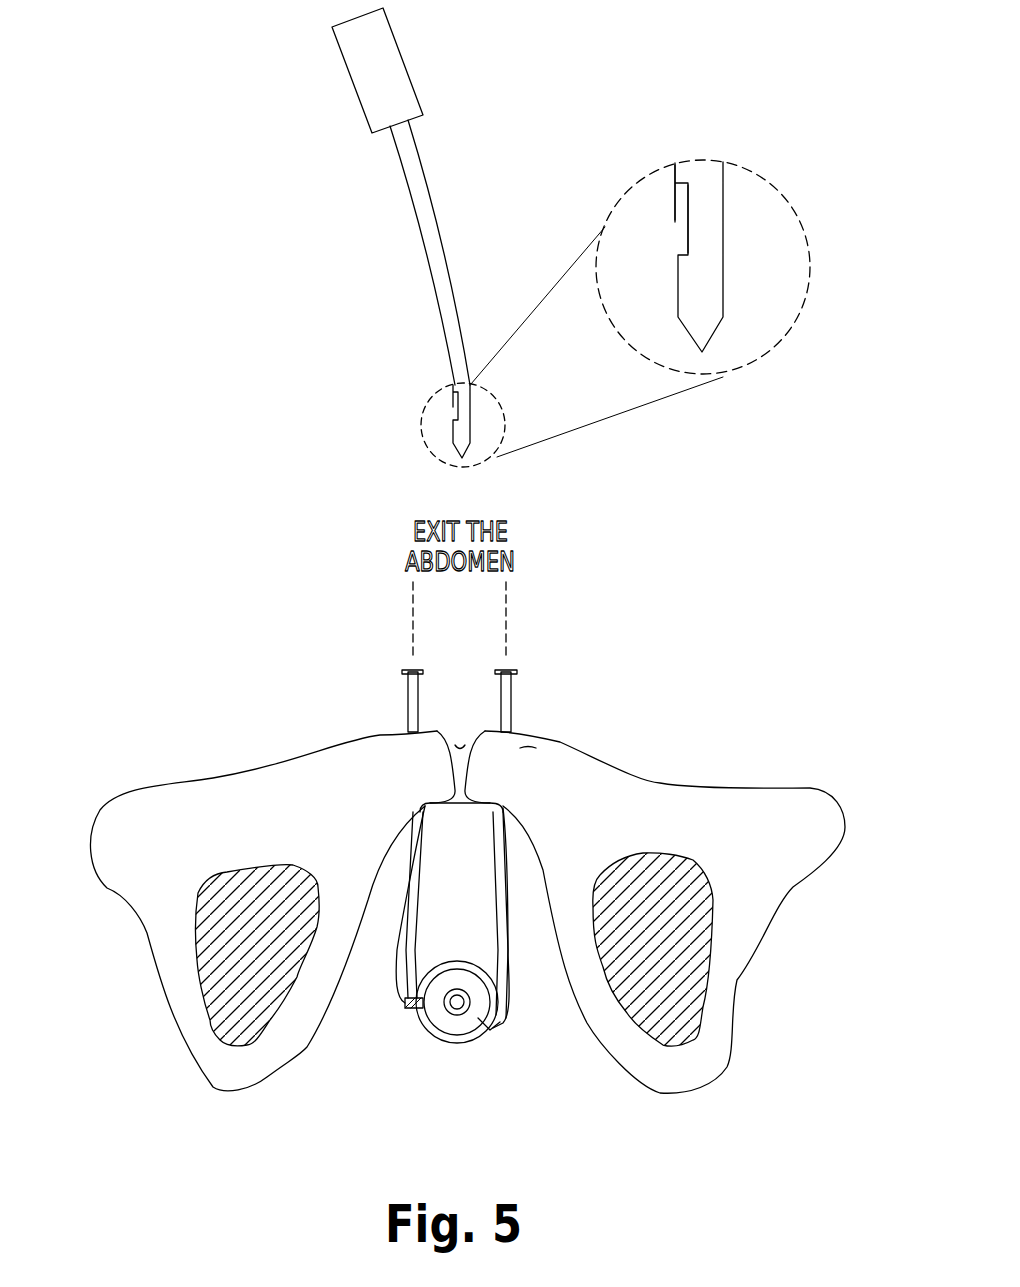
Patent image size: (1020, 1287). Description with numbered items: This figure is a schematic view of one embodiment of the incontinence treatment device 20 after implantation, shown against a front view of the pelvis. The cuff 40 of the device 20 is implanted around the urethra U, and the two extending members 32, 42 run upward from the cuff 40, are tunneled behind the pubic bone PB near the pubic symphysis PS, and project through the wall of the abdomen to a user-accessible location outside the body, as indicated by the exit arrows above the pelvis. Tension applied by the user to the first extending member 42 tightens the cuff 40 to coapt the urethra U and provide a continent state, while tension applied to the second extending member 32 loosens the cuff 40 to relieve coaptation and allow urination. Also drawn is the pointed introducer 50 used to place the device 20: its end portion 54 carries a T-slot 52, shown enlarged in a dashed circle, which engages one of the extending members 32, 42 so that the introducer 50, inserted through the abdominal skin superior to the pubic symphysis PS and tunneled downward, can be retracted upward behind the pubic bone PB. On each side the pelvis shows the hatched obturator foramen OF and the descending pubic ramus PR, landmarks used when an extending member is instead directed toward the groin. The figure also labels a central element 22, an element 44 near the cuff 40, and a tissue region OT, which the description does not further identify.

The pointed introducer 50 is at (551, 237).
The T-slot 52 is at (685, 238).
The end portion of the introducer 54 is at (452, 382).
The second extending member 32 is at (406, 704).
The first extending member 42 is at (512, 703).
The cuff 40 is at (442, 952).
The central support portion 22 is at (470, 963).
The arm end connector 44 is at (408, 1023).
The incontinence treatment device 20 is at (452, 981).
The pubic symphysis PS is at (465, 745).
The pubic bone PB is at (525, 747).
The obturator foramen OF is at (236, 846).
The descending pubic ramus PR is at (293, 1030).
The obturator tissue OT is at (237, 1042).
The urethra U is at (468, 1040).